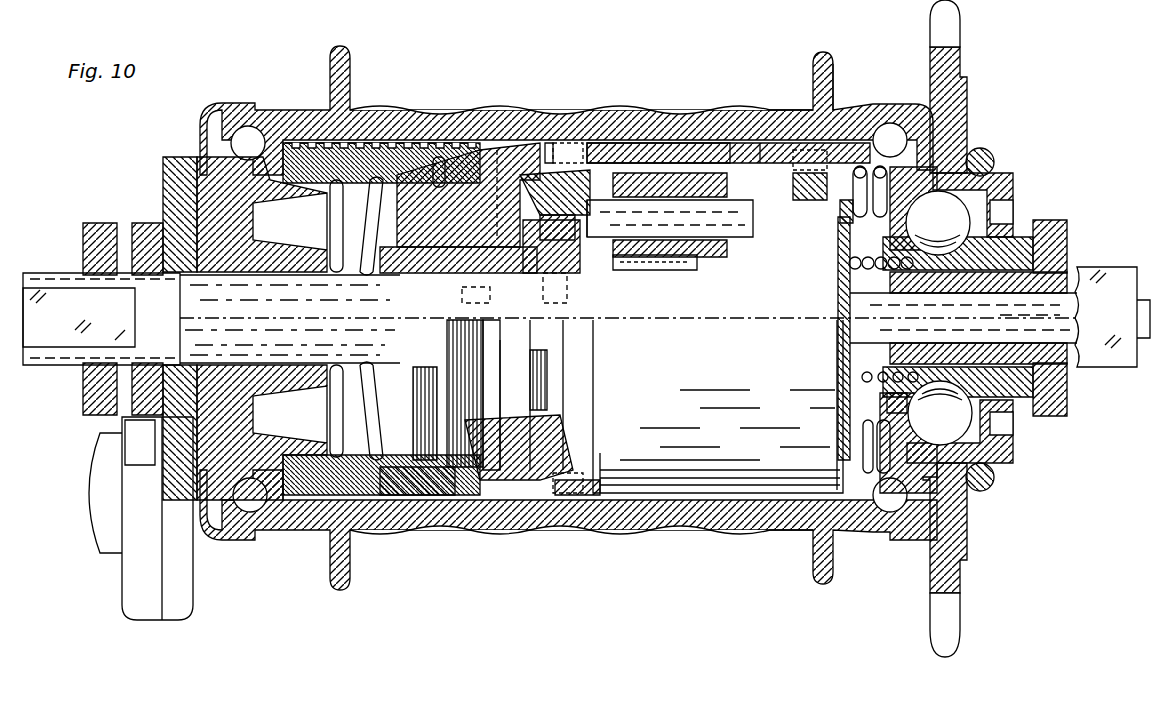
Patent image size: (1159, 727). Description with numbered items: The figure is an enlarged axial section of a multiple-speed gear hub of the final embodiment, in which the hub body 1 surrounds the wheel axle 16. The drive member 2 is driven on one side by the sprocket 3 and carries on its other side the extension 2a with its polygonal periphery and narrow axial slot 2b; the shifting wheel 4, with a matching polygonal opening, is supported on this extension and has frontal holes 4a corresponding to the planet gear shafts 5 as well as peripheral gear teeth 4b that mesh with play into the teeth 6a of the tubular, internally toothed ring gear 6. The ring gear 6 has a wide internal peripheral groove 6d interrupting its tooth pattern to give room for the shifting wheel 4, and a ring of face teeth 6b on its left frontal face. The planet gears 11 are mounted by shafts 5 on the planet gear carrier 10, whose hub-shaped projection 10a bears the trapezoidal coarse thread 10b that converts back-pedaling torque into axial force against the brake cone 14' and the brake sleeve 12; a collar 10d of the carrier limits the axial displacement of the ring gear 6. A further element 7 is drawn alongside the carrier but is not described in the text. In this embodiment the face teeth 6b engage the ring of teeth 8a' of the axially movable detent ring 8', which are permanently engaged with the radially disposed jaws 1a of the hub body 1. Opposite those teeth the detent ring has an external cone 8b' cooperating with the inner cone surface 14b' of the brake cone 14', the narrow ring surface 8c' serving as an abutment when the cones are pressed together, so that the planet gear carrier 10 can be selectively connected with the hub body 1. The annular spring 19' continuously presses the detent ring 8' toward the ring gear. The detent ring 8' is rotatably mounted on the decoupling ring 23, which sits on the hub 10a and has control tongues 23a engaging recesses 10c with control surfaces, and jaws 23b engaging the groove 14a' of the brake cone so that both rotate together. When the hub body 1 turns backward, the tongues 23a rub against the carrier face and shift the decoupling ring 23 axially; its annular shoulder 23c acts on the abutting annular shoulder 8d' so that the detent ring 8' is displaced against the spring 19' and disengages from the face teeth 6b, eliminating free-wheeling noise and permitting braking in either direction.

The hub body 1 is at (262, 112).
The jaws 1a is at (560, 143).
The drive member 2 is at (1013, 178).
The extension 2a is at (920, 460).
The axial slot 2b is at (868, 408).
The sprocket 3 is at (960, 32).
The shifting wheel 4 is at (937, 150).
The holes 4a is at (810, 196).
The gear teeth 4b is at (845, 112).
The planet gear shafts 5 is at (695, 237).
The ring gear 6 is at (755, 142).
The ring gear teeth 6a is at (805, 150).
The face teeth 6b is at (585, 143).
The peripheral groove 6d is at (758, 145).
The spring 7 is at (838, 270).
The detent ring 8' is at (553, 266).
The ring of teeth 8a' is at (577, 521).
The external cone 8b' is at (548, 150).
The ring surface 8c' is at (571, 268).
The annular shoulder 8d' is at (519, 481).
The planet gear carrier 10 is at (600, 240).
The hub-shaped projection 10a is at (372, 272).
The coarse thread 10b is at (480, 265).
The recesses 10c is at (565, 330).
The collar 10d is at (650, 143).
The planet gears 11 is at (660, 175).
The brake sleeve 12 is at (330, 145).
The brake cone 14' is at (468, 162).
The groove 14a' is at (417, 514).
The inner cone surface 14b' is at (464, 136).
The axle 16 is at (50, 285).
The annular spring 19' is at (529, 149).
The decoupling ring 23 is at (535, 270).
The control tongues 23a is at (520, 380).
The jaws 23b is at (500, 440).
The annular shoulder 23c is at (520, 360).